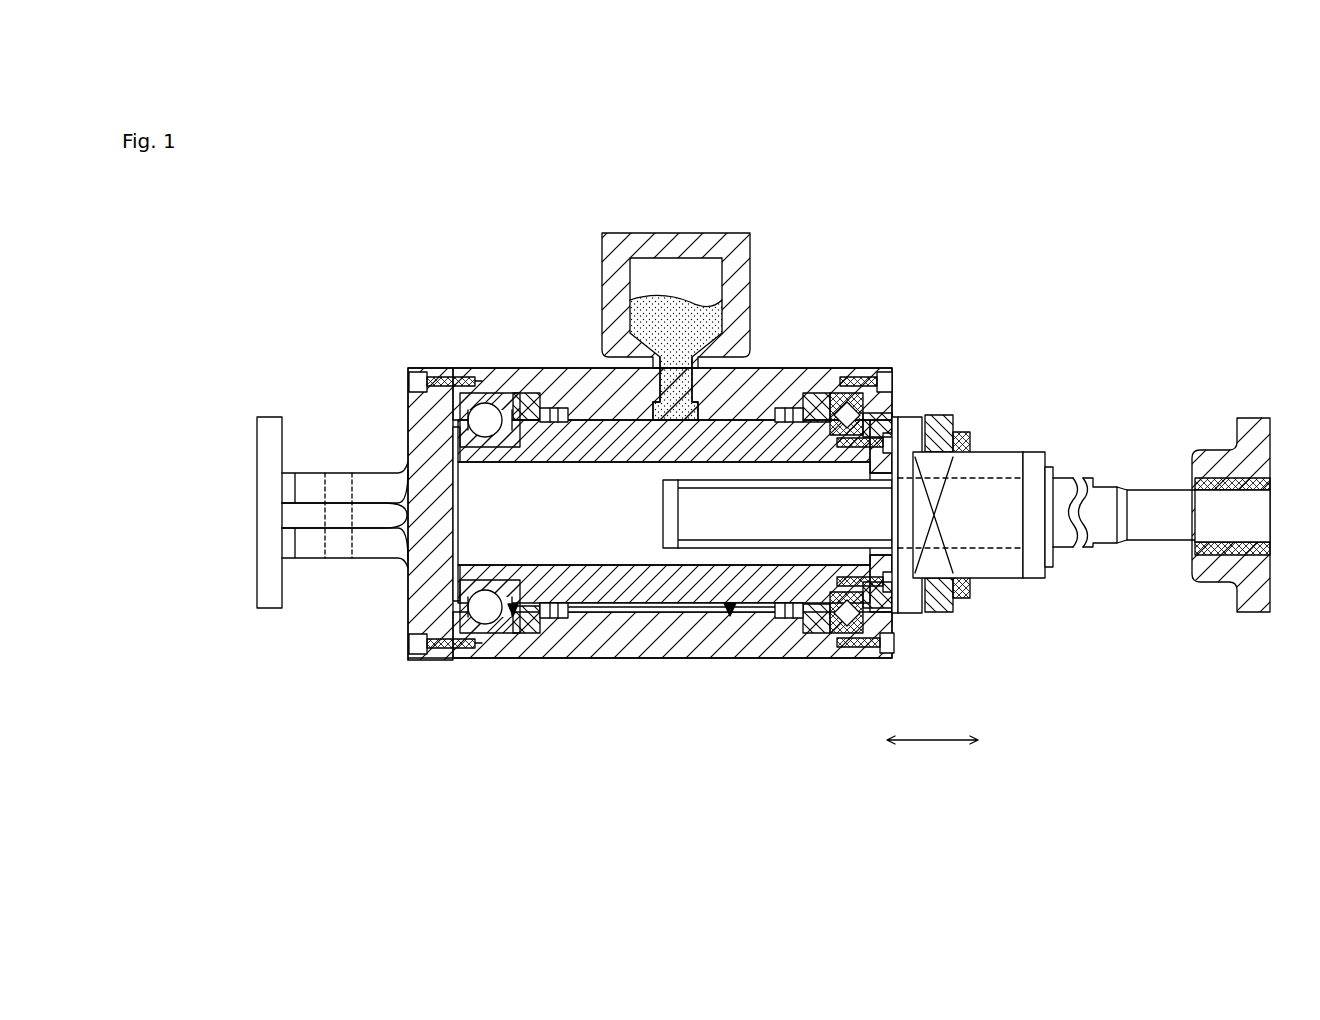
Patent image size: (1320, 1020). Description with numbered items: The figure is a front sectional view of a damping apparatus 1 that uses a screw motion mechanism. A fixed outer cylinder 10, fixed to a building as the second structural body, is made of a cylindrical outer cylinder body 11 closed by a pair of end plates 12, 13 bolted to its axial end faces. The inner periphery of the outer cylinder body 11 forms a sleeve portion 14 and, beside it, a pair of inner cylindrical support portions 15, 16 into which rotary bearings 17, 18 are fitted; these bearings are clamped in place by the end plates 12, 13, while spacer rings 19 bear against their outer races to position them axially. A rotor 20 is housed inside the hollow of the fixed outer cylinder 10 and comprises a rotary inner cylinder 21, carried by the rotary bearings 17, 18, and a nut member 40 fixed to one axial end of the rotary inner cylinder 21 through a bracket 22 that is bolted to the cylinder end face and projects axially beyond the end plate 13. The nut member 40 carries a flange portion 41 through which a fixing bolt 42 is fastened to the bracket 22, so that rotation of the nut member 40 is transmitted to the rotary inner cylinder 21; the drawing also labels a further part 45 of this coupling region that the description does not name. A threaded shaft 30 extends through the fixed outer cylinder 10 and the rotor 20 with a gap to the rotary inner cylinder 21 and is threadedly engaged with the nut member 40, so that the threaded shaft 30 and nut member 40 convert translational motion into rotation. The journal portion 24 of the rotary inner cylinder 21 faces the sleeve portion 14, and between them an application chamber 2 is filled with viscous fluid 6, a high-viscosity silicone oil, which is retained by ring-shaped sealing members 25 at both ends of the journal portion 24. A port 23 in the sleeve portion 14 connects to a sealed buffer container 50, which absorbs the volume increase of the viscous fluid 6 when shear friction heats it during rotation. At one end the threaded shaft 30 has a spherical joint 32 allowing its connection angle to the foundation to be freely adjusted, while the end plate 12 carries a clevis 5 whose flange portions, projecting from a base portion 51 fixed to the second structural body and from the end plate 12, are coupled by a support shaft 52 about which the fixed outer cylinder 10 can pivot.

The damping apparatus 1 is at (930, 372).
The application chamber 2 is at (585, 418).
The clevis 5 is at (340, 455).
The viscous fluid 6 is at (680, 296).
The fixed outer cylinder 10 is at (818, 366).
The outer cylinder body 11 is at (762, 650).
The end plate 12 is at (440, 370).
The end plate 13 is at (872, 394).
The sleeve portion 14 is at (640, 646).
The inner cylindrical support portion 15 is at (505, 657).
The inner cylindrical support portion 16 is at (852, 652).
The rotary bearing 17 is at (498, 395).
The rotary bearing 18 is at (862, 370).
The spacer ring 19 is at (540, 634).
The rotor 20 is at (732, 617).
The rotary inner cylinder 21 is at (692, 618).
The bracket 22 is at (900, 612).
The port 23 is at (612, 390).
The journal portion 24 is at (560, 620).
The sealing member 25 is at (550, 406).
The threaded shaft 30 is at (1070, 478).
The spherical joint 32 is at (1214, 414).
The nut member 40 is at (1005, 580).
The flange portion 41 is at (935, 414).
The fixing bolt 42 is at (960, 433).
The coupling 45 is at (950, 500).
The buffer container 50 is at (750, 258).
The base portion 51 is at (282, 430).
The support shaft 52 is at (362, 557).